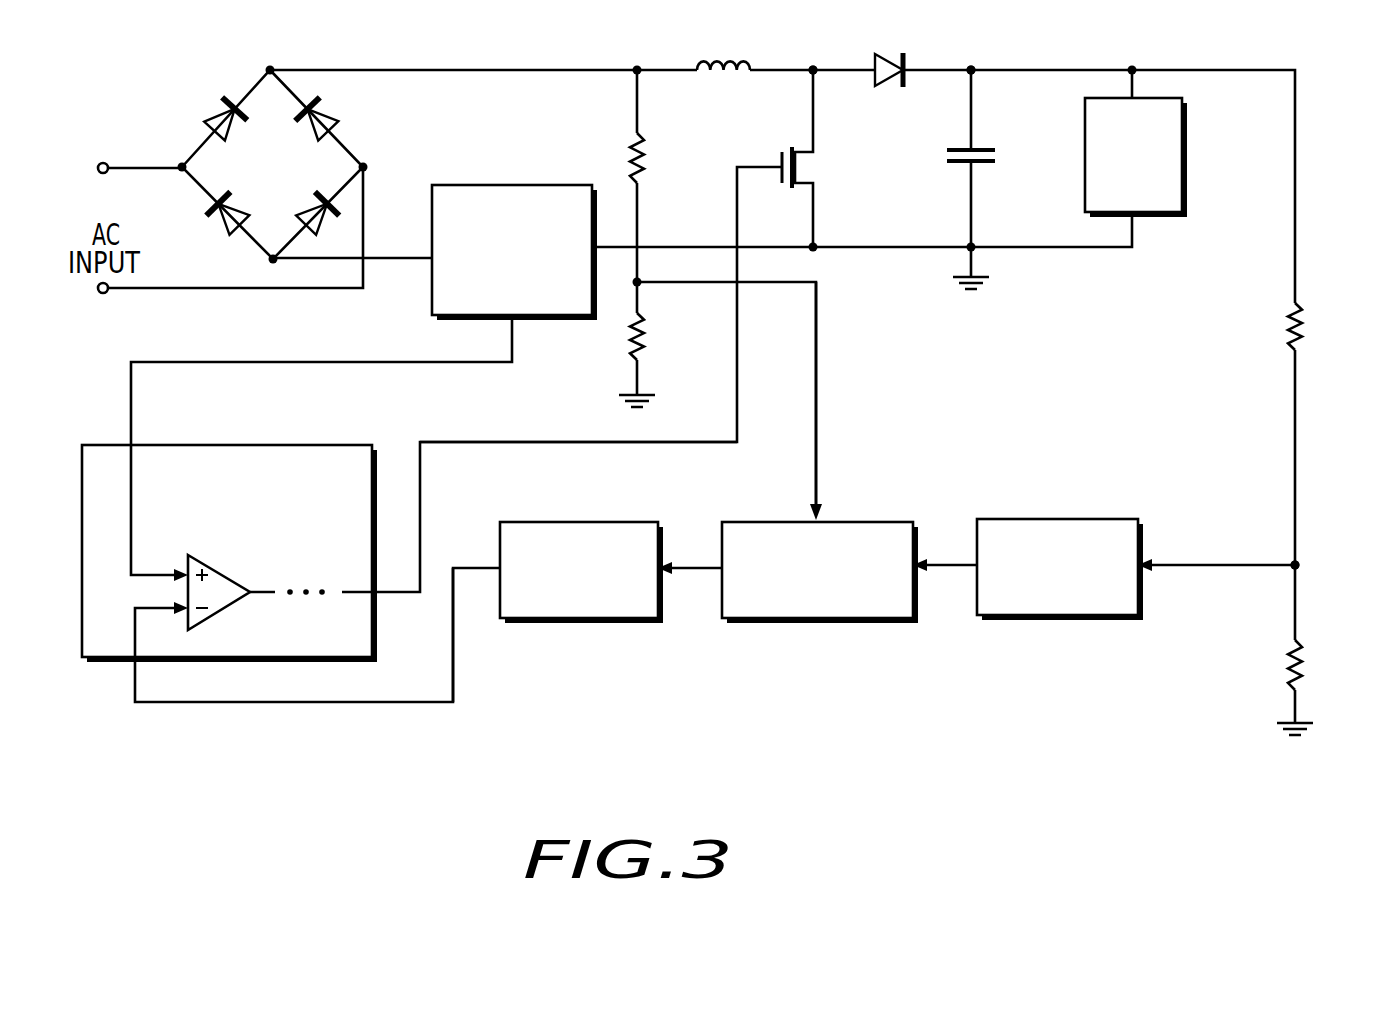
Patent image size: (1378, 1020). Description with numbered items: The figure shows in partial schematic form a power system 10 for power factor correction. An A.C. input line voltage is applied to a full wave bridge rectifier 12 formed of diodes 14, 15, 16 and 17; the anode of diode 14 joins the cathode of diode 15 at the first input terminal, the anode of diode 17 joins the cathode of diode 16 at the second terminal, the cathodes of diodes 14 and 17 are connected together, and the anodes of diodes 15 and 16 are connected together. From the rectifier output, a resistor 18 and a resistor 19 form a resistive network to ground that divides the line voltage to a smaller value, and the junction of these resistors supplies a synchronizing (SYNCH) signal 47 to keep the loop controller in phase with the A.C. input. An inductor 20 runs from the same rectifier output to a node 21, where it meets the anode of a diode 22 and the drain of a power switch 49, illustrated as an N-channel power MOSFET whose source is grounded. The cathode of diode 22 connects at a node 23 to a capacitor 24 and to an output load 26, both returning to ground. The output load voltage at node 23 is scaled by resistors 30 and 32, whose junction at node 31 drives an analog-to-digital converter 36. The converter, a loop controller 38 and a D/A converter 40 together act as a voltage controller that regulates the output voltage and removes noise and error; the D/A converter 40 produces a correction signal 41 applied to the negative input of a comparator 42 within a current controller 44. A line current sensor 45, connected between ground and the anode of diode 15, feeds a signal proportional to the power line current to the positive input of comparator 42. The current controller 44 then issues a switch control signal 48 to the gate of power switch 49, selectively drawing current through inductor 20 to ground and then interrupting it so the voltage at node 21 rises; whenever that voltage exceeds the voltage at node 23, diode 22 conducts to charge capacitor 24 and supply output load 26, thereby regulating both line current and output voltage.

The power system 10 is at (758, 792).
The full wave bridge rectifier 12 is at (248, 171).
The diode 14 is at (230, 135).
The diode 15 is at (218, 220).
The diode 16 is at (312, 200).
The diode 17 is at (328, 113).
The resistor 18 is at (648, 146).
The resistor 19 is at (647, 322).
The inductor 20 is at (716, 53).
The node 21 is at (813, 67).
The diode 22 is at (883, 57).
The node 23 is at (971, 67).
The capacitor 24 is at (998, 147).
The output load 26 is at (1187, 127).
The resistor 30 is at (1286, 321).
The node 31 is at (1300, 562).
The resistor 32 is at (1286, 660).
The analog-to-digital (A/D) converter 36 is at (1087, 518).
The loop controller 38 is at (855, 520).
The D/A converter 40 is at (547, 521).
The correction signal 41 is at (453, 675).
The comparator 42 is at (222, 573).
The current controller 44 is at (228, 534).
The line current sensor 45 is at (490, 184).
The synchronizing (SYNCH) signal 47 is at (817, 352).
The switch control signal 48 is at (642, 442).
The power switch 49 is at (783, 150).